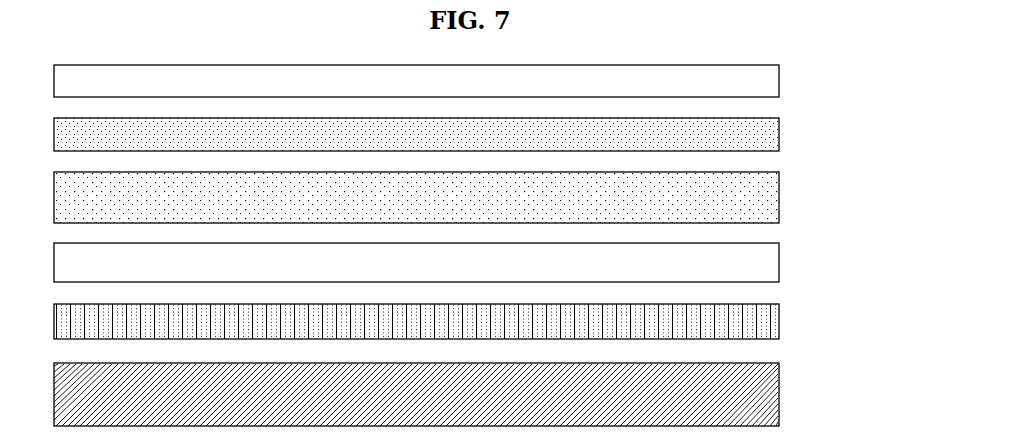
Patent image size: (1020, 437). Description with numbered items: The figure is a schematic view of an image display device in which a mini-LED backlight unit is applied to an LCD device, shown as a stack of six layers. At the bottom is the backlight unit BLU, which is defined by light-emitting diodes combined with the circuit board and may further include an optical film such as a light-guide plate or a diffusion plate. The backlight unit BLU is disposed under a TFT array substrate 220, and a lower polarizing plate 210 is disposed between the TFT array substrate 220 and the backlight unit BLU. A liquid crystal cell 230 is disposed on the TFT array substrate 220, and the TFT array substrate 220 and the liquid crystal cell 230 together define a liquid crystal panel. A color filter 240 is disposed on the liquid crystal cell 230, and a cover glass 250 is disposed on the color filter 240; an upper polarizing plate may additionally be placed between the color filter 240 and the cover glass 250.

The cover glass 250 is at (776, 81).
The color filter 240 is at (776, 134).
The liquid crystal cell 230 is at (776, 196).
The TFT array substrate 220 is at (776, 262).
The lower polarizing plate 210 is at (776, 320).
The backlight unit BLU is at (776, 394).